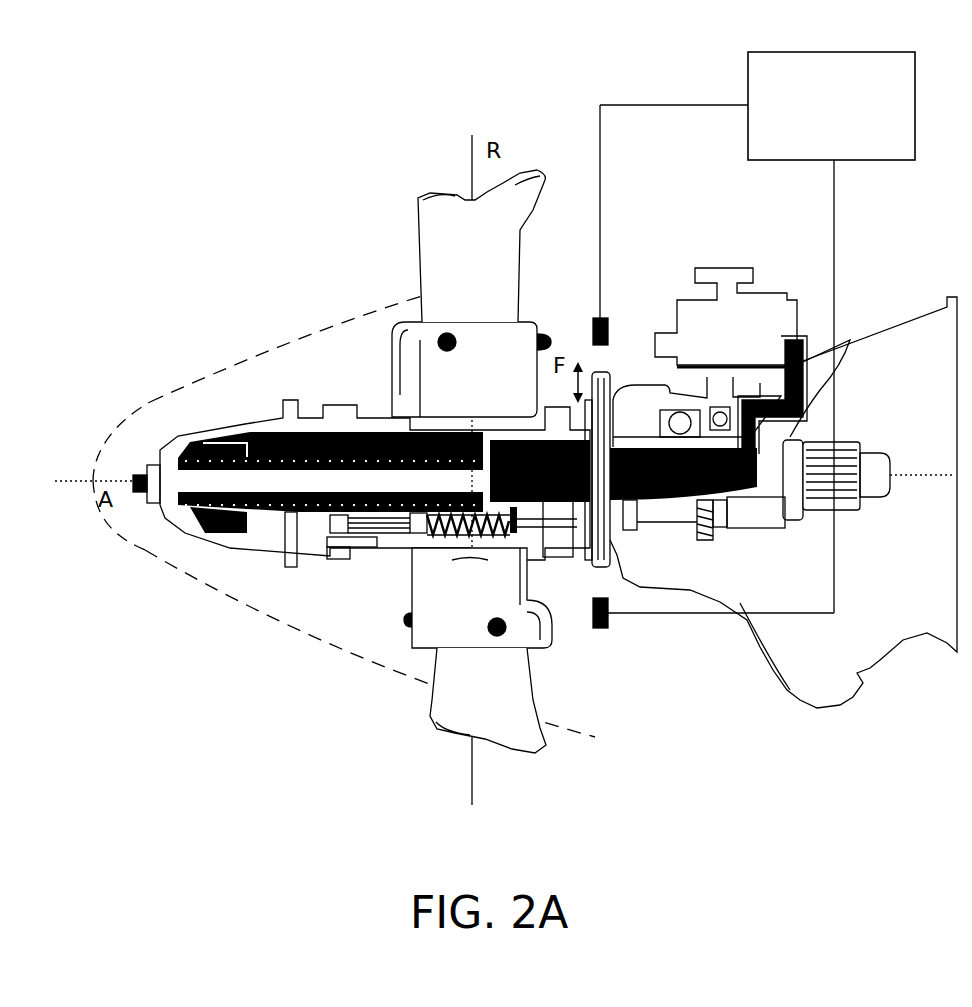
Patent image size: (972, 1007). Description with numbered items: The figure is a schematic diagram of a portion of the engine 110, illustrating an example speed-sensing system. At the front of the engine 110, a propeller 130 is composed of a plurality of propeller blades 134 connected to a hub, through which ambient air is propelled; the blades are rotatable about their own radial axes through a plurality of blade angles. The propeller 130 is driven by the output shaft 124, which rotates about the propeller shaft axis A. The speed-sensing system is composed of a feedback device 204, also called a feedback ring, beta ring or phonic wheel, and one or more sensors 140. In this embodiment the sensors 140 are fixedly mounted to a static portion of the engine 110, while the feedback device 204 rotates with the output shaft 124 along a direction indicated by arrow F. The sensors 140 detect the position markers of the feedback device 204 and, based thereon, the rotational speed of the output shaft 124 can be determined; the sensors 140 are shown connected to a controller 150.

The engine 110 is at (266, 718).
The output shaft 124 is at (790, 543).
The propeller 130 is at (226, 290).
The propeller blades 134 is at (402, 202).
The sensors 140 is at (575, 308).
The controller 150 is at (806, 141).
The feedback device 204 is at (597, 372).